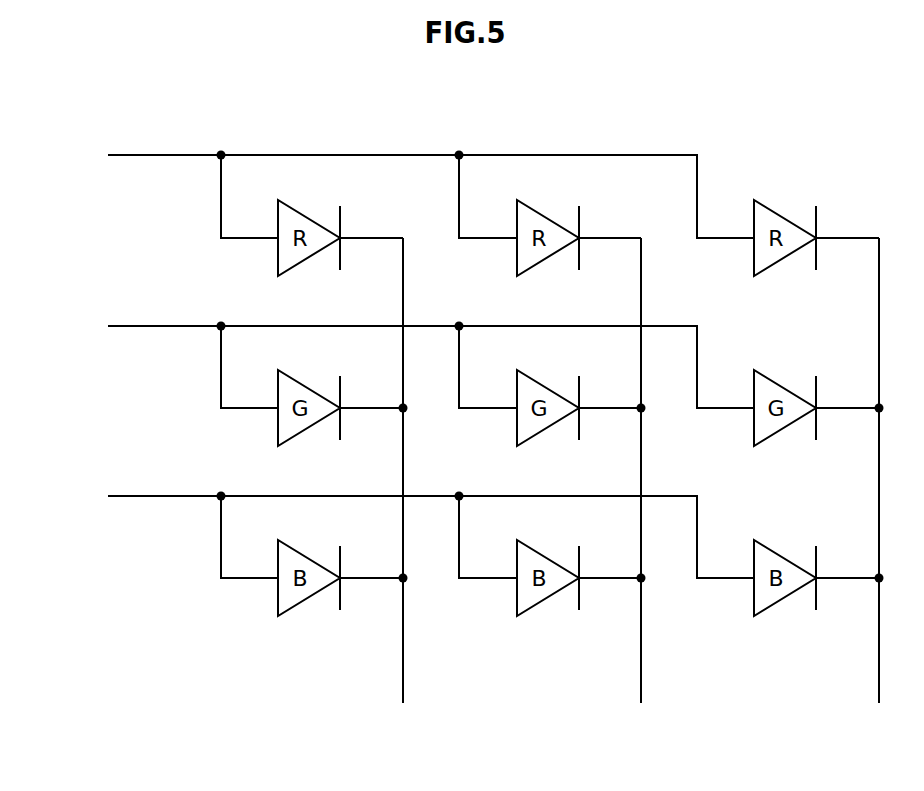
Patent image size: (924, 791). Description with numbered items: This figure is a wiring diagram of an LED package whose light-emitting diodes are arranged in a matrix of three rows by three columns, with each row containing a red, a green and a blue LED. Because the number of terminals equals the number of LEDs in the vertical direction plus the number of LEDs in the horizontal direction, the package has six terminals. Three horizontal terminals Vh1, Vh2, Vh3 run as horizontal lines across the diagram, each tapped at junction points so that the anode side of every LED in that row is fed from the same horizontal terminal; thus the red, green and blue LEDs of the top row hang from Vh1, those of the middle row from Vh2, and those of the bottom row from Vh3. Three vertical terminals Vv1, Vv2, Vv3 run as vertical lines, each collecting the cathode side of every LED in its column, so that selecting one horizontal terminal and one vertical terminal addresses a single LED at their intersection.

The first horizontal terminal Vh1 is at (398, 189).
The second horizontal terminal Vh2 is at (398, 359).
The third horizontal terminal Vh3 is at (398, 529).
The first vertical terminal Vv1 is at (402, 490).
The second vertical terminal Vv2 is at (641, 490).
The third vertical terminal Vv3 is at (879, 490).